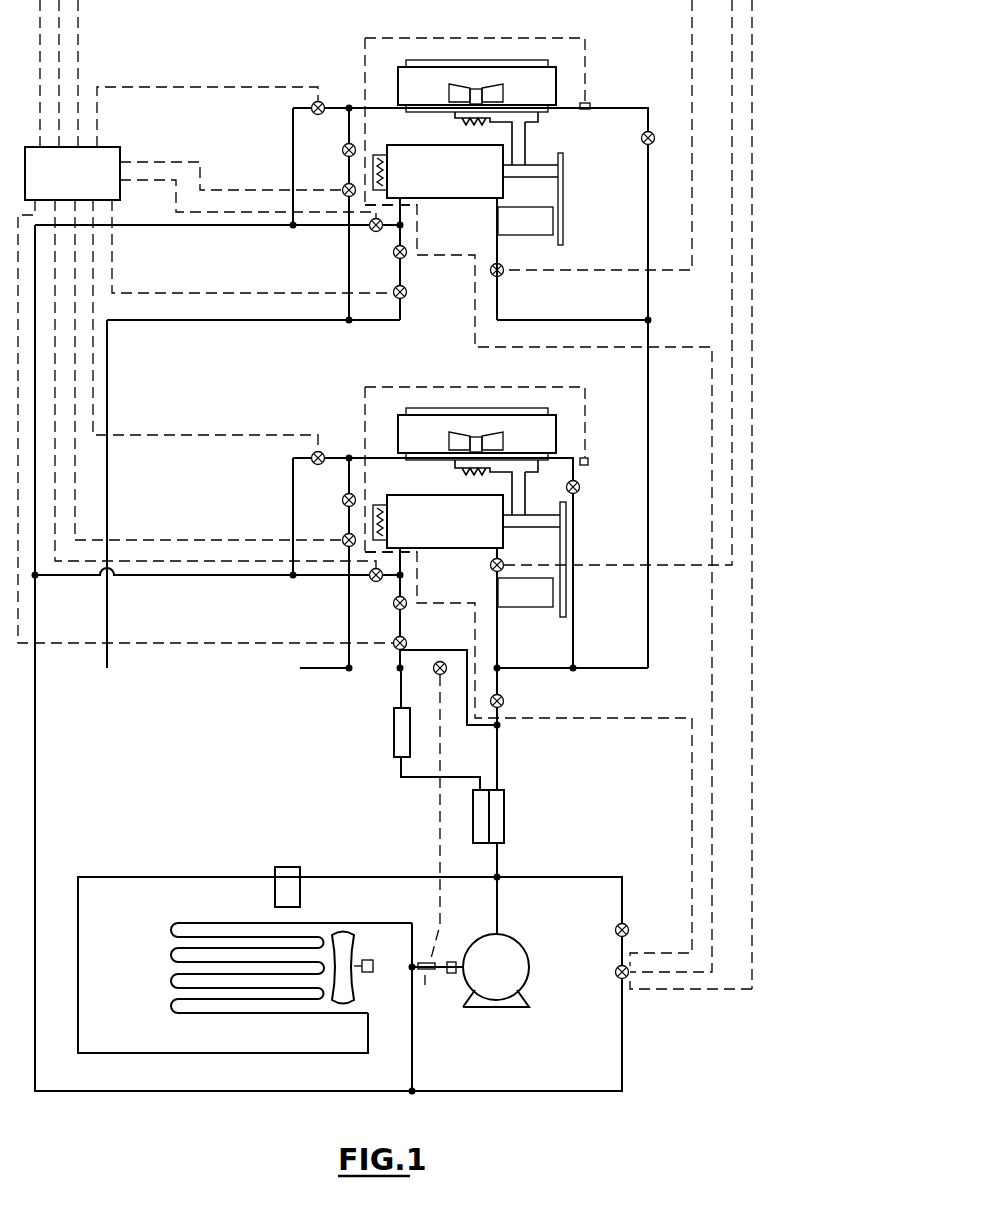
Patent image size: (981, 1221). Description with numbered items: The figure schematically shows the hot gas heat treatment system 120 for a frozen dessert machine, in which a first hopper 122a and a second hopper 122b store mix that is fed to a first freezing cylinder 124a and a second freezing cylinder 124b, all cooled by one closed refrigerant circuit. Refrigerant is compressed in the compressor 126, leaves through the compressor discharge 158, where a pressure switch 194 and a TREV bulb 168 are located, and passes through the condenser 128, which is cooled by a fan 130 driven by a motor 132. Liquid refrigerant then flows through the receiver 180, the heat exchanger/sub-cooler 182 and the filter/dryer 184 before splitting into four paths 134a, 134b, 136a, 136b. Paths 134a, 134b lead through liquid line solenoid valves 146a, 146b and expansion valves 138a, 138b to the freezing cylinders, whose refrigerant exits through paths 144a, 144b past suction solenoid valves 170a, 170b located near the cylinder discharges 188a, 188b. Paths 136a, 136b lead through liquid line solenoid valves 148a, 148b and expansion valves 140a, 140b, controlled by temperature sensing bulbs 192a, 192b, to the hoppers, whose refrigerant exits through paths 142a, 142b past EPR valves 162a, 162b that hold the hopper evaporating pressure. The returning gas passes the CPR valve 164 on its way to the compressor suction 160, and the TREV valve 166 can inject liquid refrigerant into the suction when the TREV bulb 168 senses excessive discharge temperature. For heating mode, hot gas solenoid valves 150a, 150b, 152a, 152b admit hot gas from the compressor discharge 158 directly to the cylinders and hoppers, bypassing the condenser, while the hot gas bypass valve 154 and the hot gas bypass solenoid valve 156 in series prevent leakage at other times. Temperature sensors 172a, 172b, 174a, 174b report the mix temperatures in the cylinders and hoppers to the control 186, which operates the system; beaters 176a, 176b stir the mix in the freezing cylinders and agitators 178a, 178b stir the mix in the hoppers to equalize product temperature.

The hot gas heat treatment system 120 is at (752, 205).
The first hopper 122a is at (410, 430).
The second hopper 122b is at (410, 80).
The first freezing cylinder 124a is at (456, 540).
The second freezing cylinder 124b is at (456, 190).
The compressor 126 is at (515, 978).
The condenser 128 is at (168, 978).
The fan 130 is at (343, 934).
The motor 132 is at (365, 973).
The path 134a is at (402, 670).
The path 134b is at (403, 320).
The path 136a is at (346, 668).
The path 136b is at (346, 320).
The expansion valve 138a is at (394, 603).
The expansion valve 138b is at (394, 253).
The expansion valve 140a is at (343, 498).
The expansion valve 140b is at (343, 148).
The path 142a is at (572, 526).
The path 142b is at (646, 232).
The path 144a is at (500, 625).
The path 144b is at (503, 290).
The liquid line solenoid valve 146a is at (406, 640).
The liquid line solenoid valve 146b is at (406, 290).
The liquid line solenoid valve 148a is at (343, 538).
The liquid line solenoid valve 148b is at (343, 188).
The hot gas solenoid valve 150a is at (370, 576).
The hot gas solenoid valve 150b is at (370, 226).
The hot gas solenoid valve 152a is at (322, 452).
The hot gas solenoid valve 152b is at (322, 102).
The hot gas bypass valve 154 is at (627, 928).
The hot gas bypass solenoid valve 156 is at (618, 974).
The compressor discharge 158 is at (438, 972).
The compressor suction 160 is at (498, 905).
The EPR valve 162a is at (582, 487).
The EPR valve 162b is at (645, 146).
The CPR valve 164 is at (505, 702).
The TREV valve 166 is at (441, 676).
The TREV bulb 168 is at (428, 972).
The suction solenoid valve 170a is at (503, 563).
The suction solenoid valve 170b is at (503, 266).
The temperature sensor 172a is at (374, 505).
The temperature sensor 172b is at (374, 155).
The temperature sensor 174a is at (462, 469).
The temperature sensor 174b is at (462, 119).
The beater 176a is at (550, 604).
The beater 176b is at (550, 232).
The agitator 178a is at (500, 438).
The agitator 178b is at (500, 88).
The receiver 180 is at (275, 893).
The heat exchanger/sub-cooler 182 is at (473, 812).
The filter/dryer 184 is at (394, 742).
The control 186 is at (92, 184).
The discharge 188a is at (496, 550).
The discharge 188b is at (496, 200).
The temperature sensing bulb 192a is at (582, 461).
The temperature sensing bulb 192b is at (585, 112).
The pressure switch 194 is at (450, 962).